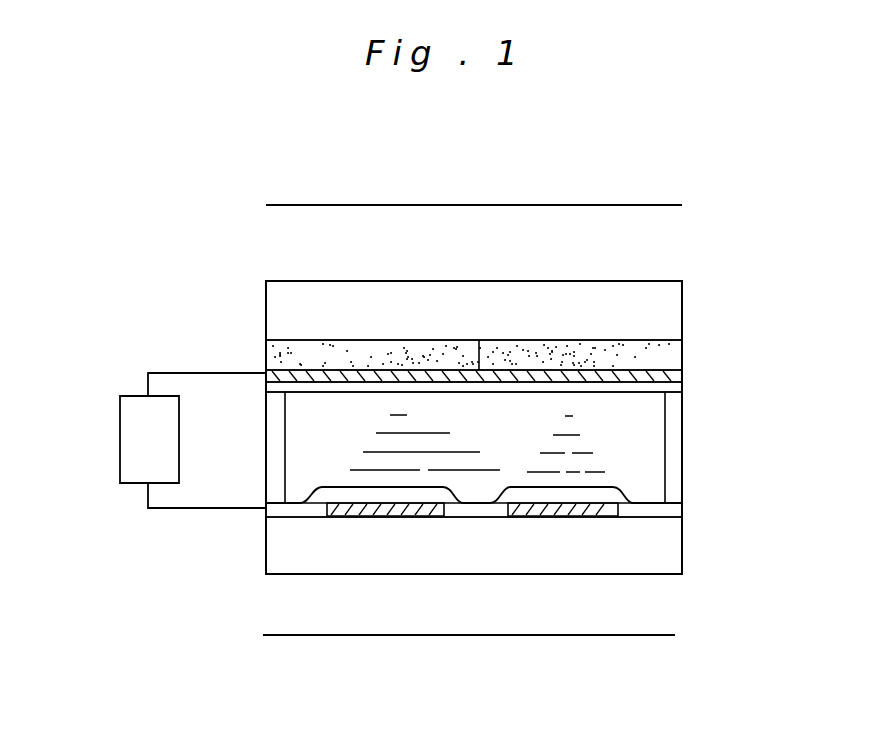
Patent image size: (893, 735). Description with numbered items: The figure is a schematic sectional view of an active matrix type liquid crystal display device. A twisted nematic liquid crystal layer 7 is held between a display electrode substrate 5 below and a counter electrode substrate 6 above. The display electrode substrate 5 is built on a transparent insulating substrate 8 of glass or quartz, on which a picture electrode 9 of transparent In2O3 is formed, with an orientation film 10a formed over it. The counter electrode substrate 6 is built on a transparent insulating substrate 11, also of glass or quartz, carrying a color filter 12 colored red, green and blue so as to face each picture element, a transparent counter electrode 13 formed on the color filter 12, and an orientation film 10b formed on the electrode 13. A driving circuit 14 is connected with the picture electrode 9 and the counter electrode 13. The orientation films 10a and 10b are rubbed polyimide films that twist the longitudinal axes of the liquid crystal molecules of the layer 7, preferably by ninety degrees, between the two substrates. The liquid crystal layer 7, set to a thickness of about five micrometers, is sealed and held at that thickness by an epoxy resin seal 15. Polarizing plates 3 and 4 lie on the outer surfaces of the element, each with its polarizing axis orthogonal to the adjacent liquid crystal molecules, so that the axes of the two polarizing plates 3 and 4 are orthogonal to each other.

The polarizing plate 3 is at (625, 636).
The polarizing plate 4 is at (676, 205).
The display electrode substrate 5 is at (760, 535).
The counter electrode substrate 6 is at (765, 293).
The twisted nematic liquid crystal layer 7 is at (670, 483).
The transparent insulating substrate 8 is at (668, 557).
The picture electrode 9 is at (385, 513).
The orientation film 10a is at (680, 515).
The orientation film 10b is at (687, 392).
The transparent insulating substrate 11 is at (677, 313).
The color filter 12 is at (683, 360).
The transparent counter electrode 13 is at (685, 378).
The driving circuit 14 is at (128, 432).
The epoxy resin seal 15 is at (270, 440).